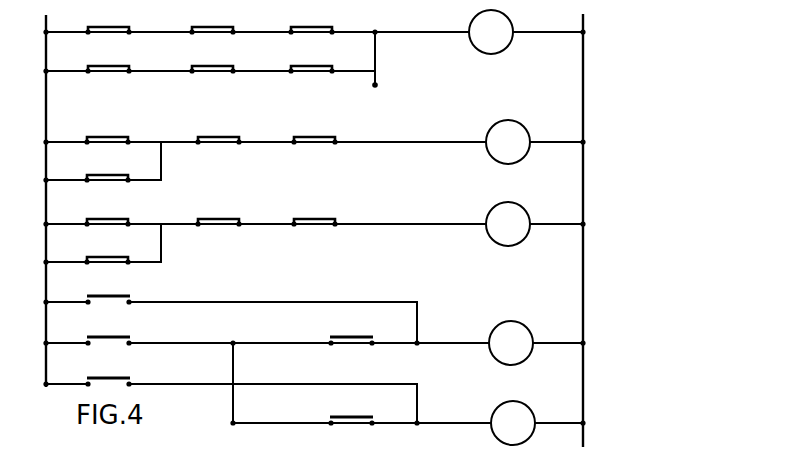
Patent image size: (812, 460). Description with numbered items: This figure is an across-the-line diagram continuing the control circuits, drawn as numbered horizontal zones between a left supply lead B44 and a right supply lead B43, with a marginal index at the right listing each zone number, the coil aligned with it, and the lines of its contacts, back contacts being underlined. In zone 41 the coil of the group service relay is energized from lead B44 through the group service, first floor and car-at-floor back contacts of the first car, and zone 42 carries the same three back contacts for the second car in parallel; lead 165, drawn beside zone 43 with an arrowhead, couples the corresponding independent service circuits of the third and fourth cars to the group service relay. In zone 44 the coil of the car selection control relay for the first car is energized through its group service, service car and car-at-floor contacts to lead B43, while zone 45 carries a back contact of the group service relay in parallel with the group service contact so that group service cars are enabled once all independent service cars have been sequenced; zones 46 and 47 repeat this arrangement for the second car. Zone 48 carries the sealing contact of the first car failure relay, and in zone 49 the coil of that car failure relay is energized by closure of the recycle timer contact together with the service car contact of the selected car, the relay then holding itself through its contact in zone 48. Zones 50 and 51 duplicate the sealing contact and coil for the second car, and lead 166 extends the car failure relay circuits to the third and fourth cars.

The zone line of group service relay GSX 41 is at (378, 31).
The zone line of independent service circuit for car B 42 is at (330, 64).
The zone line 43 is at (608, 105).
The zone line of car selection control relay CST-A 44 is at (385, 141).
The zone line of GSX back contact for car A 45 is at (330, 169).
The zone line of car selection control relay CST-B 46 is at (384, 223).
The zone line of GSX back contact for car B 47 is at (330, 250).
The zone line of sealing contact EX-A 48 is at (330, 310).
The zone line of car failure relay EX-A 49 is at (393, 342).
The zone line of sealing contact EX-B 50 is at (330, 391).
The zone line of car failure relay EX-B 51 is at (486, 422).
The lead 165 is at (372, 86).
The lead 166 is at (233, 421).
The lead B43 is at (559, 229).
The lead B44 is at (28, 199).